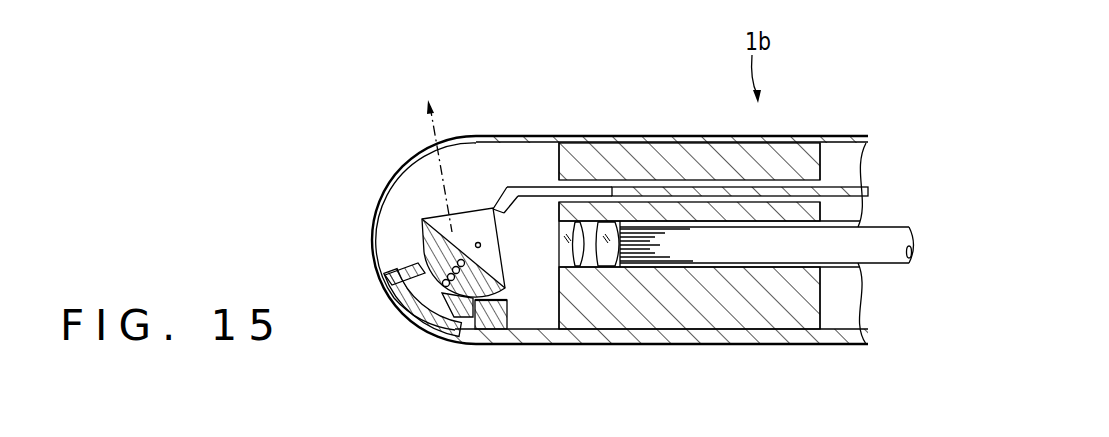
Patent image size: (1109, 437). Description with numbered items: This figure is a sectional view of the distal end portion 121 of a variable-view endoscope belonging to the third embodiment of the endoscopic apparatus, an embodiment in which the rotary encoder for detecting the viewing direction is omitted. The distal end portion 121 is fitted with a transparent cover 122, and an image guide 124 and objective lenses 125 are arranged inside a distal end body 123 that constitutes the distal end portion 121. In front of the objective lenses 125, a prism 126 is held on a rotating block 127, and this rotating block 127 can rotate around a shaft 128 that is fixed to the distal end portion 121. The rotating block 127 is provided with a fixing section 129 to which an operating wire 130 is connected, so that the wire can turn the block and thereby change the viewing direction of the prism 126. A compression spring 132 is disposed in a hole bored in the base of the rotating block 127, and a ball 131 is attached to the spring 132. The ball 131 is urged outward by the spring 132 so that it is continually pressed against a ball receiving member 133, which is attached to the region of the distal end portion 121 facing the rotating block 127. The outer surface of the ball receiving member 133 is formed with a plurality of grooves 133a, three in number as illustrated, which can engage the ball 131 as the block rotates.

The distal end portion 121 is at (704, 138).
The transparent cover 122 is at (398, 178).
The distal end body 123 is at (617, 150).
The image guide 124 is at (750, 257).
The objective lenses 125 is at (608, 265).
The prism 126 is at (470, 217).
The rotating block 127 is at (500, 329).
The shaft 128 is at (481, 245).
The fixing section 129 is at (505, 192).
The operating wire 130 is at (843, 193).
The ball 131 is at (414, 315).
The compression spring 132 is at (445, 265).
The ball receiving member 133 is at (400, 305).
The grooves 133a is at (440, 283).